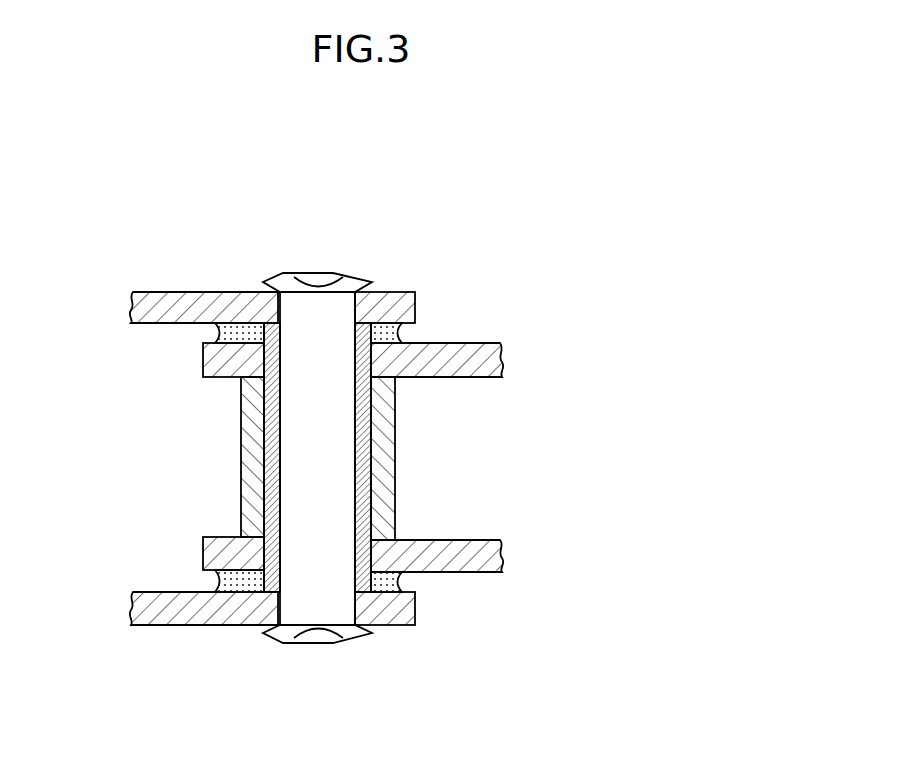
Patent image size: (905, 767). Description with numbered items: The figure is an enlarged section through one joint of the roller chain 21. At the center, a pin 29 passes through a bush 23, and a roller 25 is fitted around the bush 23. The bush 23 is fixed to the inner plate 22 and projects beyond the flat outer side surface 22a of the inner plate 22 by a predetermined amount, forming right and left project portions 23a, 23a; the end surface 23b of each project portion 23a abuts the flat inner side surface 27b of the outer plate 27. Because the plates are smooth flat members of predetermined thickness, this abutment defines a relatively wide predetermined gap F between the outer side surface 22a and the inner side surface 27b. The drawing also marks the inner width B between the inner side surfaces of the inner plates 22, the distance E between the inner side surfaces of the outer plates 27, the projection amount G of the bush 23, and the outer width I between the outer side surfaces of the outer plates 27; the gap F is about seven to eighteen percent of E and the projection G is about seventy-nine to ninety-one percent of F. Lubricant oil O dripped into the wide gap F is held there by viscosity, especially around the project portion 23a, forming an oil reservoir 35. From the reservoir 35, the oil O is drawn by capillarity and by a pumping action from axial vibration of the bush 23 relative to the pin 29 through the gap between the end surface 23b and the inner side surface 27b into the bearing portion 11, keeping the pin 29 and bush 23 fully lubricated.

The roller chain 21 is at (463, 173).
The bearing portion 11 is at (382, 433).
The inner plate 22 is at (218, 374).
The outer side surface of the inner plate 22a is at (203, 342).
The bush 23 is at (266, 464).
The project portion 23a is at (393, 312).
The end surface of the bush 23b is at (257, 310).
The roller 25 is at (243, 528).
The outer plate 27 is at (167, 292).
The inner side surface of the outer plate 27b is at (216, 331).
The pin 29 is at (320, 276).
The oil reservoir 35 is at (240, 320).
The lubricant oil O is at (392, 345).
The outer width I is at (135, 292).
The distance between inner side surfaces of the outer plates E is at (415, 322).
The inner width B is at (503, 377).
The projection amount G is at (522, 370).
The predetermined gap F is at (372, 325).